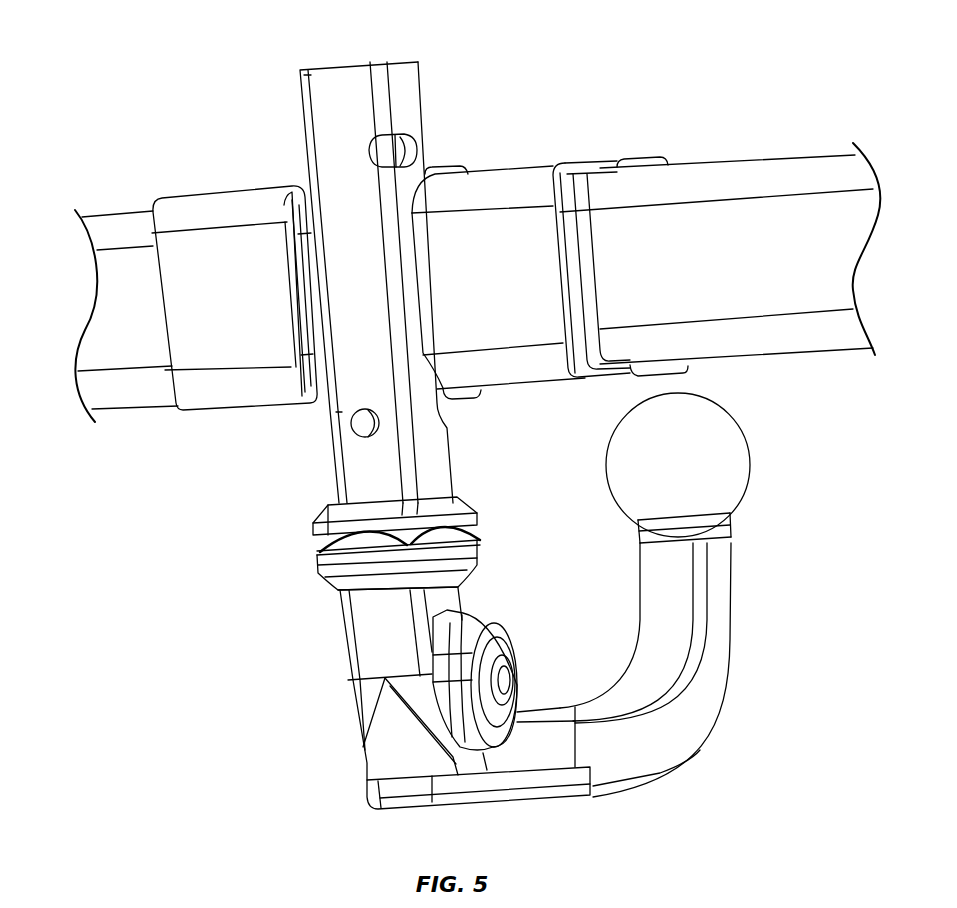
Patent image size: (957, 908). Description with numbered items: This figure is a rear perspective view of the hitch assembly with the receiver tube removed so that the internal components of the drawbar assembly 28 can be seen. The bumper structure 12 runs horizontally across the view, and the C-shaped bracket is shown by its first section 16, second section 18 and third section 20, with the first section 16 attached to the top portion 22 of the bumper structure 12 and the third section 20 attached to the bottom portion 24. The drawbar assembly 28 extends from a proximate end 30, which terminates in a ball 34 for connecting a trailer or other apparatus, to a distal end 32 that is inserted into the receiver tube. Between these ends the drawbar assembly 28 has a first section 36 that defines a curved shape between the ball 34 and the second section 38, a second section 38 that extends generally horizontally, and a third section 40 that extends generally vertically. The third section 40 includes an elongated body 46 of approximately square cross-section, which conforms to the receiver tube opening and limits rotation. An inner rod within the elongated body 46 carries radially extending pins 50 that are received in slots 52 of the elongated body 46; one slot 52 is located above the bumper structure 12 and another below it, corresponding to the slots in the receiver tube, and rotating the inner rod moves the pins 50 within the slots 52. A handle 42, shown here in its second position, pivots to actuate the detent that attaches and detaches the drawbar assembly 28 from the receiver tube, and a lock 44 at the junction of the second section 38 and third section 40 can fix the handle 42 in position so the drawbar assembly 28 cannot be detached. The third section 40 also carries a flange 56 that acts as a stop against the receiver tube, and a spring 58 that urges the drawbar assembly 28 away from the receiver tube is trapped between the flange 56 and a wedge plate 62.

The bumper structure 12 is at (176, 319).
The first section 16 is at (588, 163).
The second section 18 is at (507, 212).
The third section 20 is at (593, 371).
The top portion 22 is at (110, 204).
The bottom portion 24 is at (108, 425).
The drawbar assembly 28 is at (387, 710).
The proximate end 30 is at (714, 585).
The distal end 32 is at (342, 256).
The ball 34 is at (610, 442).
The first section 36 is at (758, 626).
The second section 38 is at (559, 692).
The third section 40 is at (320, 539).
The handle 42 is at (528, 797).
The lock 44 is at (507, 682).
The elongated body 46 is at (422, 102).
The pins 50 is at (412, 150).
The slots 52 is at (366, 133).
The flange 56 is at (330, 580).
The spring 58 is at (320, 549).
The wedge plate 62 is at (322, 517).